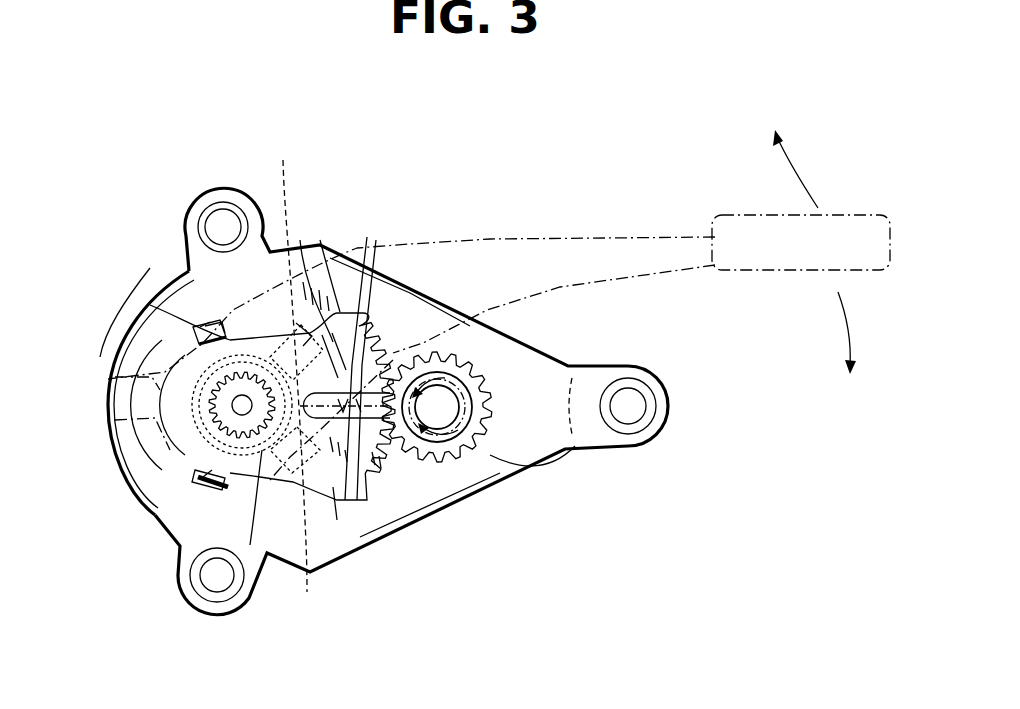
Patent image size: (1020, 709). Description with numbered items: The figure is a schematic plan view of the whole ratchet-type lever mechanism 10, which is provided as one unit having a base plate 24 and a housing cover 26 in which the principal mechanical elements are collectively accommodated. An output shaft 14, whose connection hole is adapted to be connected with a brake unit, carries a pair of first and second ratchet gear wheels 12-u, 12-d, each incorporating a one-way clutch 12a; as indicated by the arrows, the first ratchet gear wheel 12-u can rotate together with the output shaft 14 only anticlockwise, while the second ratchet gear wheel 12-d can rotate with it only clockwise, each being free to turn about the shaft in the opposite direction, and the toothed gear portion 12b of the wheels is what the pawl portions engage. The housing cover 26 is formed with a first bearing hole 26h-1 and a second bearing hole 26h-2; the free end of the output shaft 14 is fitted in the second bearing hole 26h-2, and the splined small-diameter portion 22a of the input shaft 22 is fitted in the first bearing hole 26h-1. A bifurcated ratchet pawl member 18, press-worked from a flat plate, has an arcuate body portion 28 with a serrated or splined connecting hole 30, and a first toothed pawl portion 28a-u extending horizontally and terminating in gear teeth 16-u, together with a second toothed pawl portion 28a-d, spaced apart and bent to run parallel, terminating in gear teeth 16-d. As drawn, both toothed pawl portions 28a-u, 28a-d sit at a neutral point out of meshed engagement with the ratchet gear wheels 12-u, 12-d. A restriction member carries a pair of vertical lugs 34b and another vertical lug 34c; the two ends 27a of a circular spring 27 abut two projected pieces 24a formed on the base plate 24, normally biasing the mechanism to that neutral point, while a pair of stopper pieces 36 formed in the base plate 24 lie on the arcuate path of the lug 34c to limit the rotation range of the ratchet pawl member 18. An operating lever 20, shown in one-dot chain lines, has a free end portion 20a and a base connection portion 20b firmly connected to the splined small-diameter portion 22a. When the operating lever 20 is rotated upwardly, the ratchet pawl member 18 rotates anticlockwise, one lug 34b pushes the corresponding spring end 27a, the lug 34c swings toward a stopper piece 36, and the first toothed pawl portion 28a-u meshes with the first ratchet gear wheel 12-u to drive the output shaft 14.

The ratchet-type lever mechanism 10 is at (568, 188).
The one-way clutch 12a is at (500, 395).
The gear of link 12b is at (450, 390).
The second ratchet gear wheel 12-d is at (414, 348).
The first ratchet gear wheel 12-u is at (460, 468).
The output shaft 14 is at (490, 400).
The gear teeth 16-d is at (375, 249).
The gear teeth 16-u is at (373, 537).
The bifurcated ratchet pawl member 18 is at (247, 322).
The operating lever 20 is at (490, 232).
The free end portion 20a is at (643, 243).
The base connection portion 20b is at (112, 378).
The input shaft 22 is at (265, 555).
The splined small-diameter portion 22a is at (248, 452).
The base plate 24 is at (343, 543).
The projected piece 24a is at (200, 327).
The housing cover 26 is at (193, 600).
The first bearing hole 26h-1 is at (213, 474).
The second bearing hole 26h-2 is at (427, 462).
The circular spring 27 is at (112, 412).
The end of the circular spring 27a is at (213, 343).
The body portion 28 is at (195, 215).
The second toothed pawl portion 28a-d is at (320, 240).
The first toothed pawl portion 28a-u is at (337, 520).
The serrated or splined connecting hole 30 is at (213, 383).
The vertical lug 34b is at (190, 271).
The vertical lug 34c is at (300, 240).
The stopper piece 36 is at (294, 374).